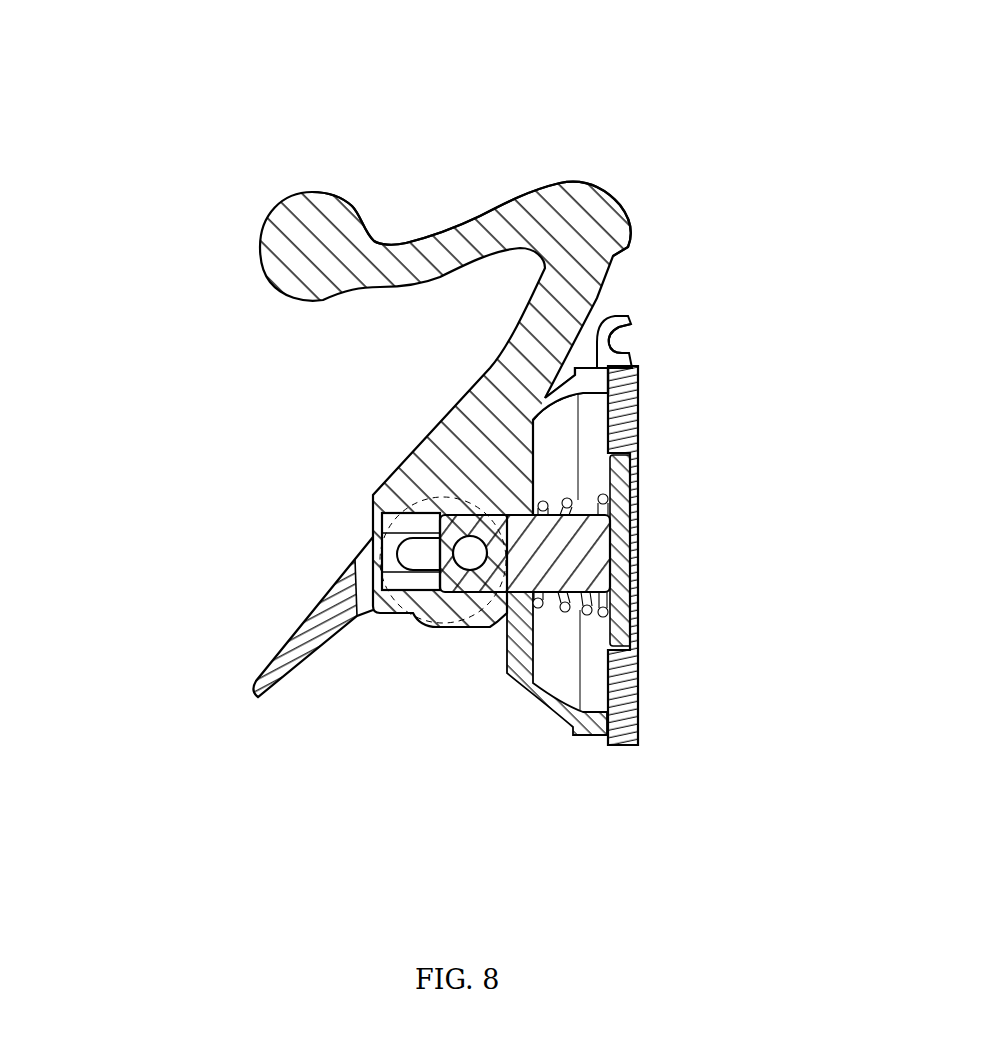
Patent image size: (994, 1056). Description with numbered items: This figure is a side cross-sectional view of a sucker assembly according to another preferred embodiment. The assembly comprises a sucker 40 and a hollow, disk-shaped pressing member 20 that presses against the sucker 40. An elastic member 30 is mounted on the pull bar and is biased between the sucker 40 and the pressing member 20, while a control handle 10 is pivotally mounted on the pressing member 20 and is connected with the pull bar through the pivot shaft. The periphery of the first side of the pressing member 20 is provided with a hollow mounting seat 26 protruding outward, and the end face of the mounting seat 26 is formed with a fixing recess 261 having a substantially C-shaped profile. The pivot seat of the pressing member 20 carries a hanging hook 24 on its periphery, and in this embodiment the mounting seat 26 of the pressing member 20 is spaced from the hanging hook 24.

The control handle 10 is at (278, 623).
The pressing member 20 is at (393, 458).
The hanging hook 24 is at (436, 236).
The mounting seat 26 is at (618, 320).
The fixing recess 261 is at (620, 343).
The elastic member 30 is at (557, 607).
The sucker 40 is at (643, 713).